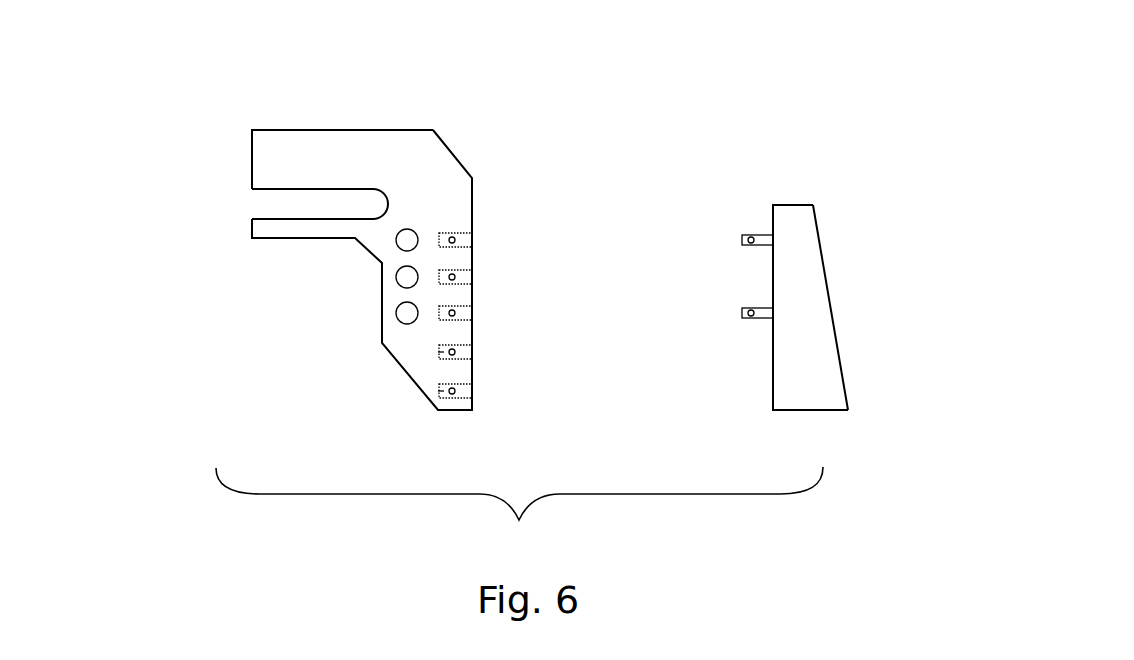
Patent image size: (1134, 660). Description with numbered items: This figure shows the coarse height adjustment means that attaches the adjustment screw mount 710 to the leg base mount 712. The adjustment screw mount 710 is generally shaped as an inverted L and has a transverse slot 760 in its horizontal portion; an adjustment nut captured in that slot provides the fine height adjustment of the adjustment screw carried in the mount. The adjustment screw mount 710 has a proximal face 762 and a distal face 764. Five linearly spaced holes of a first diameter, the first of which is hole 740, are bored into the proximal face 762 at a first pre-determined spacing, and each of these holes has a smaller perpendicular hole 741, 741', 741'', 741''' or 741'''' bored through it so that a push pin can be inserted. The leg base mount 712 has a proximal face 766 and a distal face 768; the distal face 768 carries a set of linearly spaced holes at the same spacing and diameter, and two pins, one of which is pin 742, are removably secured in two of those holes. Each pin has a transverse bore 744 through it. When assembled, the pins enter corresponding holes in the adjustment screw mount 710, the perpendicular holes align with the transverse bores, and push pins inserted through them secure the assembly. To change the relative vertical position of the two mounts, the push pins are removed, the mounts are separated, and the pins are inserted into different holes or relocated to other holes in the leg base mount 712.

The adjustment screw mount 710 is at (382, 155).
The leg base mount 712 is at (817, 293).
The hole 740 is at (480, 237).
The perpendicular hole 741 is at (344, 258).
The perpendicular hole 741' is at (343, 302).
The perpendicular hole 741'' is at (339, 340).
The perpendicular hole 741''' is at (341, 383).
The perpendicular hole 741'''' is at (341, 422).
The pin 742 is at (737, 320).
The transverse bore 744 is at (750, 341).
The transverse slot 760 is at (248, 204).
The proximal face 762 is at (494, 198).
The distal face 764 is at (228, 165).
The proximal face 766 is at (862, 360).
The distal face 768 is at (743, 273).